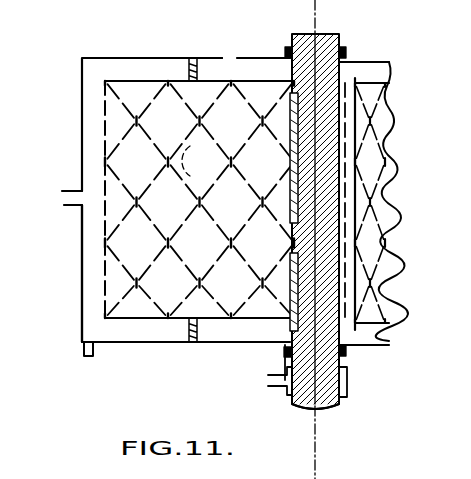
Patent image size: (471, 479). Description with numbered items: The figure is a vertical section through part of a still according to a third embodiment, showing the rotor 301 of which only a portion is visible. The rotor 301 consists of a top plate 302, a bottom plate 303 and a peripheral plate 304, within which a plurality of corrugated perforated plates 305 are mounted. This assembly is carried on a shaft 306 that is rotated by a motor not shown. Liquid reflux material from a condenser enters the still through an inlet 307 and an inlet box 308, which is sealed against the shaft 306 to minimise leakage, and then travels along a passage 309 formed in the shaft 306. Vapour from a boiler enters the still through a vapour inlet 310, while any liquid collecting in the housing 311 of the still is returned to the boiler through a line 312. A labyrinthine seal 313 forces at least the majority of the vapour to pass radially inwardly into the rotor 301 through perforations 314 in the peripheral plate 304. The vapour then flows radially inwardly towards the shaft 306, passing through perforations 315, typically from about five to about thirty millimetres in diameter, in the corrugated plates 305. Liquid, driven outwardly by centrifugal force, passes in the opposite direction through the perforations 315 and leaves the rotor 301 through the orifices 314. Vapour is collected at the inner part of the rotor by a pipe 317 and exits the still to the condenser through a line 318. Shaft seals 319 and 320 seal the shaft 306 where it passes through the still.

The rotor 301 is at (118, 80).
The top plate 302 is at (272, 72).
The bottom plate 303 is at (372, 334).
The peripheral plate 304 is at (104, 258).
The corrugated perforated plates 305 is at (210, 300).
The shaft 306 is at (317, 407).
The inlet 307 is at (268, 380).
The inlet box 308 is at (350, 379).
The passage 309 is at (300, 213).
The vapour inlet 310 is at (66, 192).
The housing 311 is at (80, 304).
The line 312 is at (88, 356).
The labyrinthine seal 313 is at (163, 62).
The perforations 314 is at (104, 114).
The perforations 315 is at (200, 161).
The pipe 317 is at (388, 140).
The line 318 is at (222, 56).
The shaft seal 319 is at (346, 52).
The shaft seal 320 is at (346, 353).